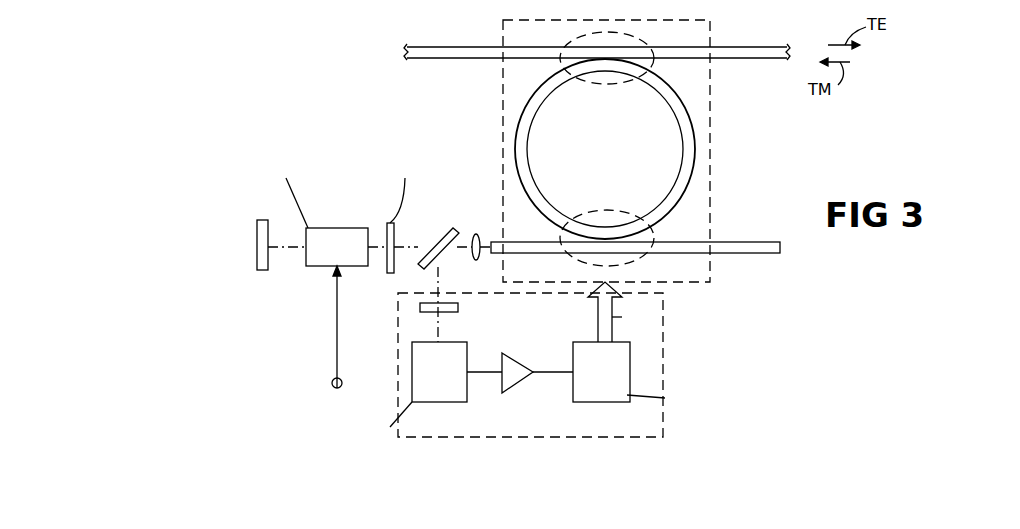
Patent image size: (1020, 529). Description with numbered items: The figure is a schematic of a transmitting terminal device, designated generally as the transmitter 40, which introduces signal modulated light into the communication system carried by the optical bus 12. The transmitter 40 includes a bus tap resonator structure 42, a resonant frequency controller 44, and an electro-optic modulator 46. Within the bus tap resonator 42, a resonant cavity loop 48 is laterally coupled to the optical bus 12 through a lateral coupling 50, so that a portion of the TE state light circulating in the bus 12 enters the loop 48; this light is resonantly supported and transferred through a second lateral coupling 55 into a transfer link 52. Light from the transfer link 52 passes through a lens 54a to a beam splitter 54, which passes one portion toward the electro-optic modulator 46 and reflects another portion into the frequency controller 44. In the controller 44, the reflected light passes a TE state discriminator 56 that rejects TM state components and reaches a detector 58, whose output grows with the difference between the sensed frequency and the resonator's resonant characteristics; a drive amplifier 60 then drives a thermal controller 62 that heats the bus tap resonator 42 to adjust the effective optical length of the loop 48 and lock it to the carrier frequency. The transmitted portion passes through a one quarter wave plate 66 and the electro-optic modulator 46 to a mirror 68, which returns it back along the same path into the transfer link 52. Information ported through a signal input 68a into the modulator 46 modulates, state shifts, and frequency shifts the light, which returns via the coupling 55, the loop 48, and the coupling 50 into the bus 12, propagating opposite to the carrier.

The optical bus 12 is at (457, 60).
The transmitter 40 is at (800, 140).
The bus tap resonator structure 42 is at (710, 178).
The resonant frequency controller 44 is at (663, 338).
The electro-optic modulator 46 is at (348, 228).
The resonant cavity loop 48 is at (675, 185).
The lateral coupling 50 is at (632, 84).
The transfer link 52 is at (736, 253).
The beam splitter 54 is at (452, 228).
The lens 54a is at (476, 234).
The lateral coupling 55 is at (607, 207).
The TE state discriminator 56 is at (458, 307).
The detector 58 is at (440, 402).
The drive amplifier 60 is at (512, 390).
The thermal controller 62 is at (592, 402).
The one quarter wave plate 66 is at (391, 223).
The mirror 68 is at (257, 240).
The signal input 68a is at (332, 380).